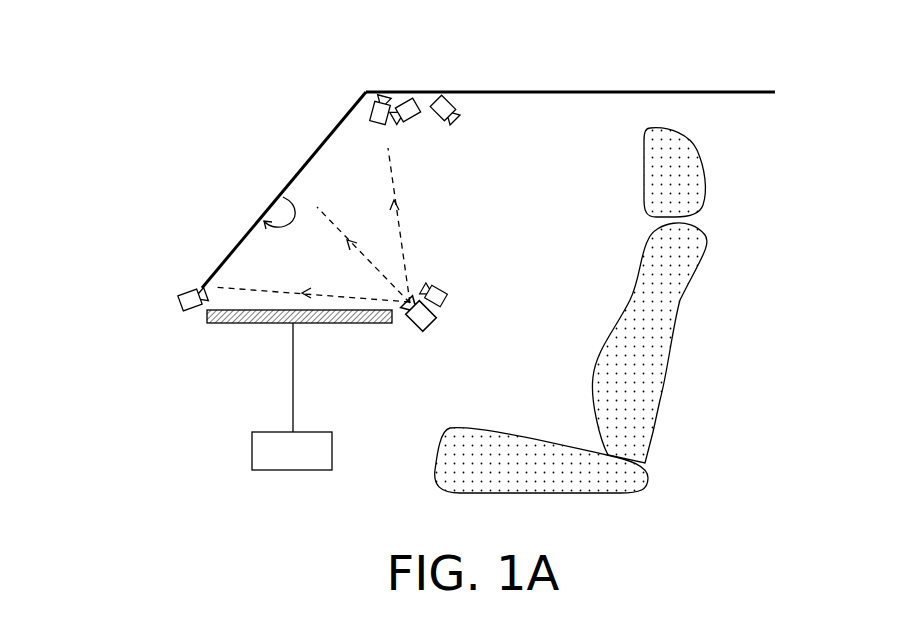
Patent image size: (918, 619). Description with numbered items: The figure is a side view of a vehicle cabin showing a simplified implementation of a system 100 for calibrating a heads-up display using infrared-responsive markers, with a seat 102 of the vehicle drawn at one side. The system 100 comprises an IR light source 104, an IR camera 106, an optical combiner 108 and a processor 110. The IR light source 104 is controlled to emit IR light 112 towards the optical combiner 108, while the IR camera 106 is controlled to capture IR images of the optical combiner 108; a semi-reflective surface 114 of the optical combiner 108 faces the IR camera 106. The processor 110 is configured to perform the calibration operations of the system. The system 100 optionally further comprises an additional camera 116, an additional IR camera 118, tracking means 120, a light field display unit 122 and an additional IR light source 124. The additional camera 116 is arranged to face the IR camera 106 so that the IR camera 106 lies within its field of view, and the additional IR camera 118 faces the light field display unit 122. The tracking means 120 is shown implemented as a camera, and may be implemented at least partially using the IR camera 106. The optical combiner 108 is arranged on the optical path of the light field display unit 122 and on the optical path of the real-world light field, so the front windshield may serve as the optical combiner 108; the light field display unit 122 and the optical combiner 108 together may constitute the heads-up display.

The system 100 is at (127, 110).
The seat 102 is at (684, 349).
The IR light source 104 is at (414, 333).
The IR camera 106 is at (447, 300).
The optical combiner 108 is at (316, 150).
The processor 110 is at (271, 466).
The IR light 112 is at (378, 268).
The semi-reflective surface 114 is at (283, 197).
The additional camera 116 is at (187, 308).
The additional IR camera 118 is at (417, 98).
The tracking means 120 is at (447, 98).
The light field display unit 122 is at (219, 325).
The additional IR light source 124 is at (375, 96).